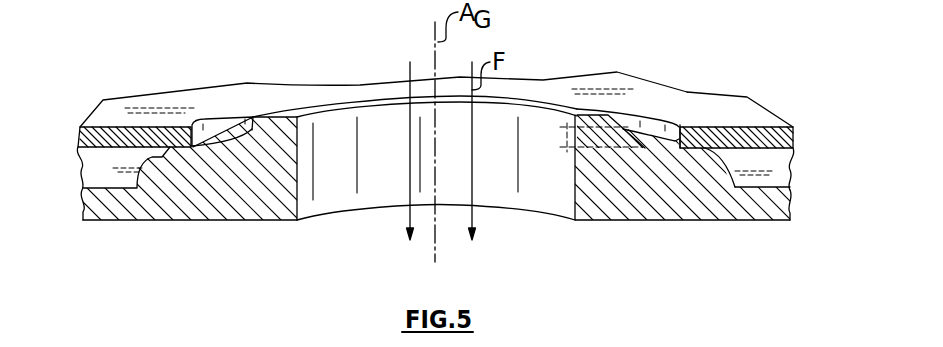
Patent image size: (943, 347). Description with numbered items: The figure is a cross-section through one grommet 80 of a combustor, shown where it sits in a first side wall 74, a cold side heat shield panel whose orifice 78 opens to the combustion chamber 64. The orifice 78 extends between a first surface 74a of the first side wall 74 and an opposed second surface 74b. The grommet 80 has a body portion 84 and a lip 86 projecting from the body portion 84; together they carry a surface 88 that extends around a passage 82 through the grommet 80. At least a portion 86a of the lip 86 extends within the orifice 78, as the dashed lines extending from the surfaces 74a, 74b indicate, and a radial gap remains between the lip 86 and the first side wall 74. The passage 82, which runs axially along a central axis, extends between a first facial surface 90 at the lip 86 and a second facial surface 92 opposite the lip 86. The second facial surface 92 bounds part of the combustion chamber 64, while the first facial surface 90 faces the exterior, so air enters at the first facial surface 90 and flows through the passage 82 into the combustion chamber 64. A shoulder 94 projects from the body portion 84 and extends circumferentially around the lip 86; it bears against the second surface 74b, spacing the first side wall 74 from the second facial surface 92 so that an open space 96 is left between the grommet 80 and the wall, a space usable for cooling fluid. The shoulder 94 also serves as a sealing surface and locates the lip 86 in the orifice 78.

The combustion chamber 64 is at (327, 286).
The first side wall 74 is at (655, 114).
The first surface 74a is at (718, 117).
The second surface 74b is at (731, 148).
The orifice 78 is at (208, 127).
The grommet 80 is at (215, 224).
The passage 82 is at (383, 187).
The body portion 84 is at (593, 207).
The lip 86 is at (616, 117).
The portion of the lip 86a is at (600, 140).
The surface 88 is at (323, 145).
The first facial surface 90 is at (290, 116).
The second facial surface 92 is at (254, 221).
The shoulder 94 is at (138, 156).
The open space 96 is at (110, 160).